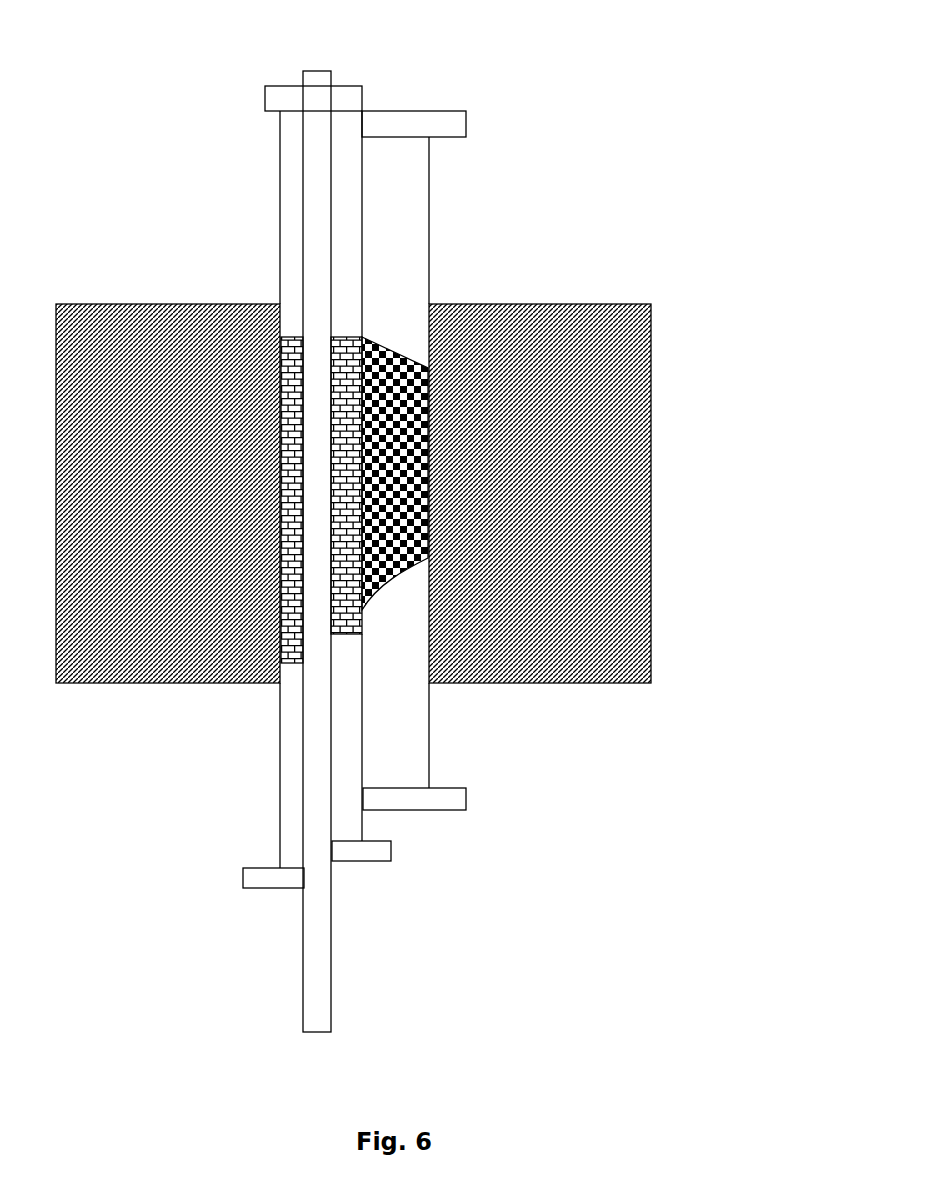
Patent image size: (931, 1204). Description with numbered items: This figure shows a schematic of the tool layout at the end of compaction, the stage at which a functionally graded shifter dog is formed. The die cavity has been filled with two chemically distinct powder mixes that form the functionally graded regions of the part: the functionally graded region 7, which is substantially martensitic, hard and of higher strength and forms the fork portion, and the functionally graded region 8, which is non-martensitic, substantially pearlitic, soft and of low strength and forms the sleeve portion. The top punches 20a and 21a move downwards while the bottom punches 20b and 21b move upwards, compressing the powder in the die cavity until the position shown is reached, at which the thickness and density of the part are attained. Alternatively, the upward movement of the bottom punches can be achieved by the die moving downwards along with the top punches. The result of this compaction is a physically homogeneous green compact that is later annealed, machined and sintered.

The functionally graded region 7 is at (394, 393).
The functionally graded region 8 is at (282, 433).
The top punch 20a is at (393, 161).
The top punch 21a is at (282, 279).
The bottom punch 20b is at (395, 759).
The bottom punch 21b is at (277, 818).